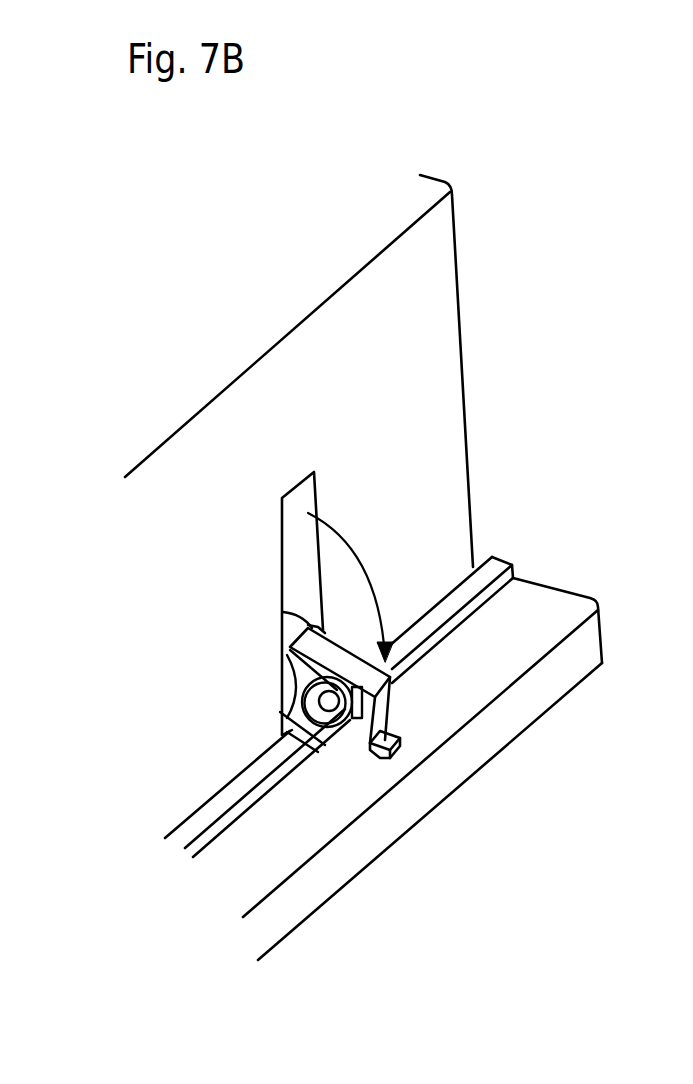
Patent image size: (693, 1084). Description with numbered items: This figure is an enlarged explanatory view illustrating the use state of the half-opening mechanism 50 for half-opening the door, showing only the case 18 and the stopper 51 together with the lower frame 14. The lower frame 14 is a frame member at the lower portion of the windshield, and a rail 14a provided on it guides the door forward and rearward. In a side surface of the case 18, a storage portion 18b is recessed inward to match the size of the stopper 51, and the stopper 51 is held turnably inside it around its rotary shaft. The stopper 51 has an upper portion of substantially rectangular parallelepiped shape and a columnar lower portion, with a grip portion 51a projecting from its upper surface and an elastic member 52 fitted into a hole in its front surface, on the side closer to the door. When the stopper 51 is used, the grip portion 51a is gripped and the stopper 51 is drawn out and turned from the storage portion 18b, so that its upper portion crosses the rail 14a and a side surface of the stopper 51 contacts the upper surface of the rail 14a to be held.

The case 18 is at (425, 303).
The storage portion 18b is at (288, 498).
The lower frame 14 is at (587, 640).
The rail 14a is at (505, 578).
The half-opening mechanism 50 is at (260, 662).
The stopper 51 is at (382, 705).
The grip portion 51a is at (393, 750).
The elastic member 52 is at (337, 733).